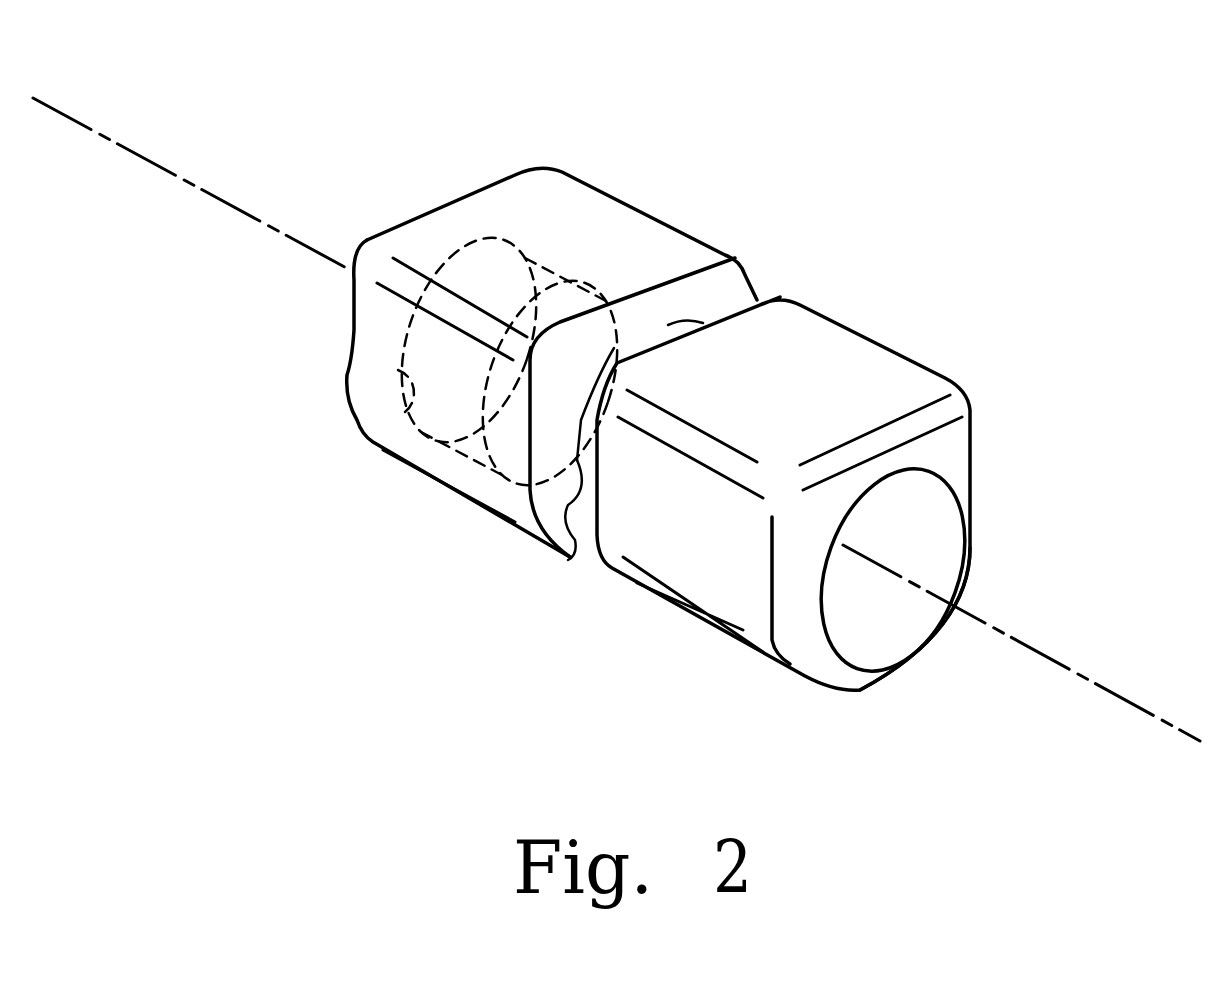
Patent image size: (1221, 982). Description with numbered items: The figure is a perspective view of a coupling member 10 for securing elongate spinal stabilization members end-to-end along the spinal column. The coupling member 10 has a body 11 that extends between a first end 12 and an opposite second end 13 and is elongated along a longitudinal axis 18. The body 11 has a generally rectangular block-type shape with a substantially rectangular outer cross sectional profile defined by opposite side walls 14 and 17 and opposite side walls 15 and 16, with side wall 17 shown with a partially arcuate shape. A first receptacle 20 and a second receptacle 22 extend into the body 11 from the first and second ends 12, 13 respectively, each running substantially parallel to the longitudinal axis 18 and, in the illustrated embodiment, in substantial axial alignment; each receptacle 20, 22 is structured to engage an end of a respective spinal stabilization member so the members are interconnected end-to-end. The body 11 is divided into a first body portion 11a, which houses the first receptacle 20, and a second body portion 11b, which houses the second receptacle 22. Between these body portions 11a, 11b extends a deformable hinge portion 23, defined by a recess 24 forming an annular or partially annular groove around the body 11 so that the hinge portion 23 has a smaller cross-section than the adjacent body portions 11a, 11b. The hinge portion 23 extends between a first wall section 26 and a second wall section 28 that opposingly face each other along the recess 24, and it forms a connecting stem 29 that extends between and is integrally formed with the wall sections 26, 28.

The coupling member 10 is at (848, 118).
The body 11 is at (836, 300).
The first body portion 11a is at (845, 345).
The second body portion 11b is at (600, 210).
The first end 12 is at (940, 440).
The second end 13 is at (528, 162).
The side wall 14 is at (928, 385).
The side wall 15 is at (972, 468).
The side wall 16 is at (740, 572).
The side wall 17 is at (893, 673).
The longitudinal axis 18 is at (1114, 680).
The first receptacle 20 is at (853, 630).
The second receptacle 22 is at (385, 437).
The deformable hinge portion 23 is at (597, 598).
The recess 24 is at (570, 560).
The first wall section 26 is at (782, 292).
The second wall section 28 is at (737, 287).
The connecting stem 29 is at (667, 338).